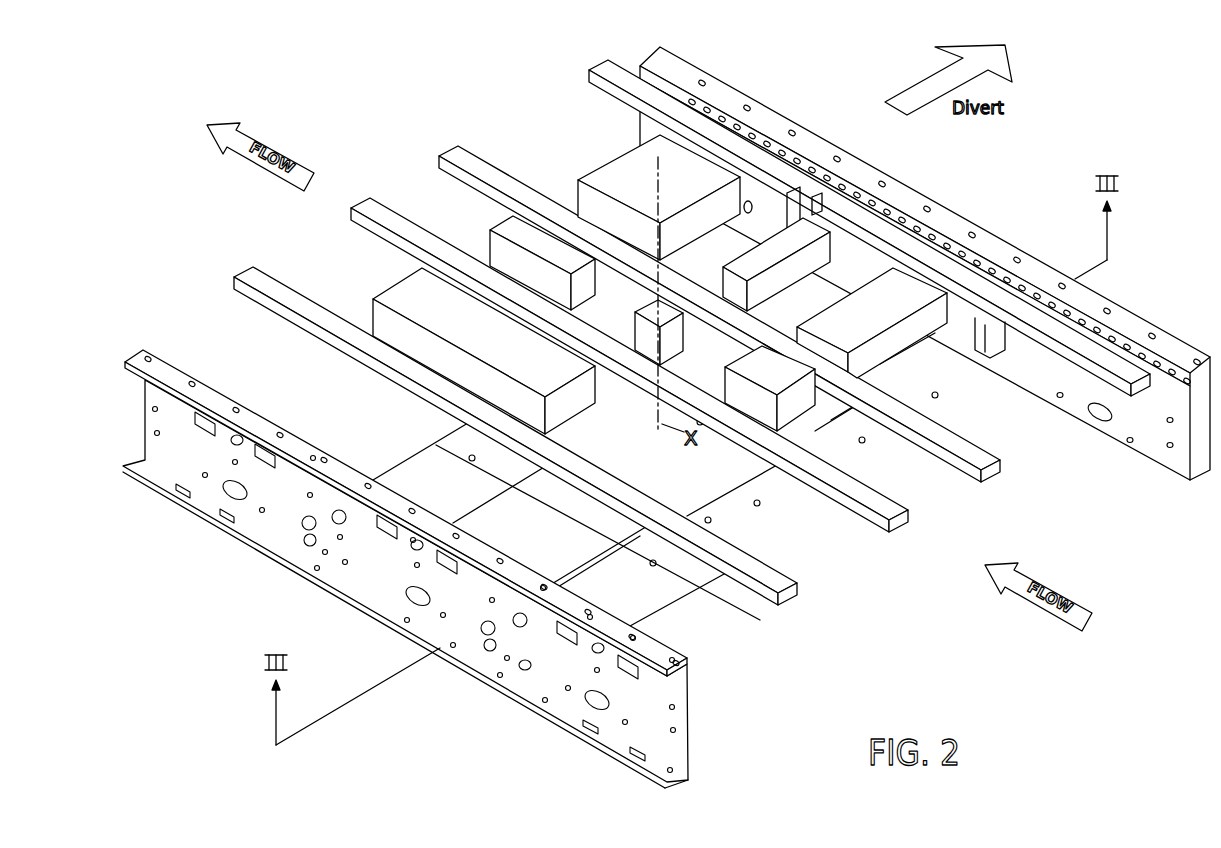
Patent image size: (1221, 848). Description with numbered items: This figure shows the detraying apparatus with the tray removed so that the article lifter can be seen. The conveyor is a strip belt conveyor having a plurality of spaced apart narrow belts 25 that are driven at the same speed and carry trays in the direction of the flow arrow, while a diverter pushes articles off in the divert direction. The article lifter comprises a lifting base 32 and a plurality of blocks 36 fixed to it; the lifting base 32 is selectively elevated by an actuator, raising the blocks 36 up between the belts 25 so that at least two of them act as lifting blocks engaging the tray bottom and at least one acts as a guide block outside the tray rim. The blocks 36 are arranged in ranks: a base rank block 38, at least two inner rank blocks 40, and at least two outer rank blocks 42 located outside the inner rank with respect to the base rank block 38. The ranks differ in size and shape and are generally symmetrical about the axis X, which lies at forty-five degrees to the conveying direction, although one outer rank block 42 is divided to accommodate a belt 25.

The narrow belts 25 is at (1110, 358).
The lifting base 32 is at (600, 220).
The blocks 36 is at (612, 148).
The base rank block 38 is at (693, 163).
The inner rank blocks 40 is at (505, 228).
The outer rank blocks 42 is at (405, 288).